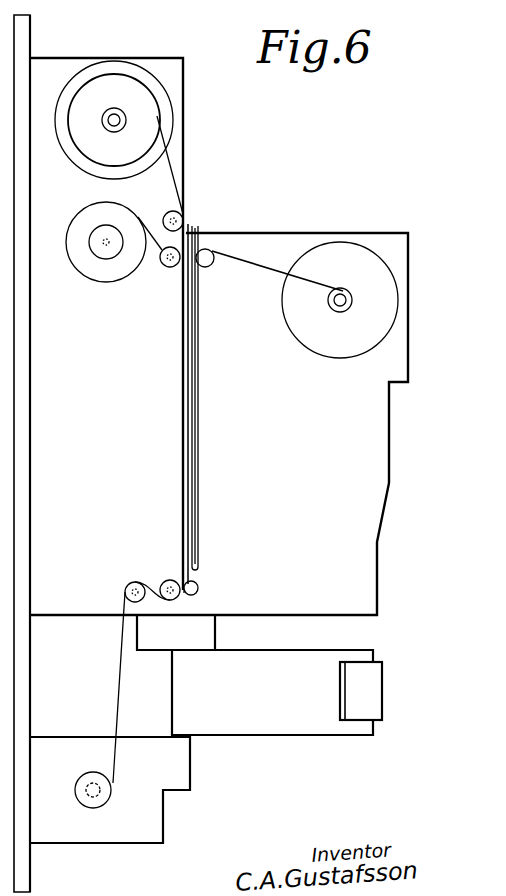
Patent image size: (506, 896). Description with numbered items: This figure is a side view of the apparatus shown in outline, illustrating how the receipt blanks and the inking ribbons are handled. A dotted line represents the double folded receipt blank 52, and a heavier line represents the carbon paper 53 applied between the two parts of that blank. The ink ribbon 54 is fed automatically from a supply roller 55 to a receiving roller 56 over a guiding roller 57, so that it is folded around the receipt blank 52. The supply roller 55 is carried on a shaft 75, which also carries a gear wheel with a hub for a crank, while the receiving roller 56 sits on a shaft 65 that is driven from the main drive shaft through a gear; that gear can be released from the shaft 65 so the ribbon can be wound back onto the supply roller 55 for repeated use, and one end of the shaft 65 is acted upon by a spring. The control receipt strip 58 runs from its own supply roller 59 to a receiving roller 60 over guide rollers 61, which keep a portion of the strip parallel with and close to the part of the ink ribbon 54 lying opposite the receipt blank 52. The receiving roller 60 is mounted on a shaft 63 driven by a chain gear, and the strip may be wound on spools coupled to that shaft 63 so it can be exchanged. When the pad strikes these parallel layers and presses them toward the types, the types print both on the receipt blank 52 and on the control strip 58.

The receipt blank 52 is at (198, 380).
The carbon paper 53 is at (192, 423).
The ink ribbon 54 is at (182, 446).
The supply roller 55 is at (148, 122).
The receiving roller 56 is at (387, 302).
The guiding roller 57 is at (200, 588).
The control receipt strip 58 is at (182, 389).
The supply roller 59 is at (95, 278).
The receiving roller 60 is at (112, 790).
The guide rollers 61 is at (166, 267).
The shaft 63 is at (90, 780).
The shaft 65 is at (344, 288).
The shaft 75 is at (115, 108).